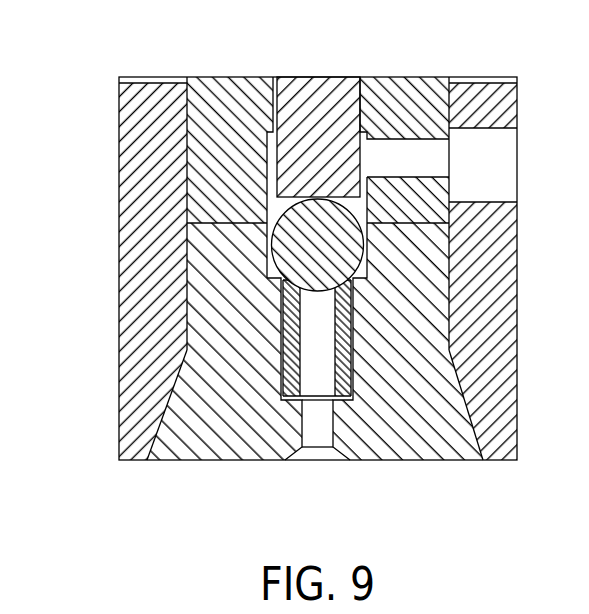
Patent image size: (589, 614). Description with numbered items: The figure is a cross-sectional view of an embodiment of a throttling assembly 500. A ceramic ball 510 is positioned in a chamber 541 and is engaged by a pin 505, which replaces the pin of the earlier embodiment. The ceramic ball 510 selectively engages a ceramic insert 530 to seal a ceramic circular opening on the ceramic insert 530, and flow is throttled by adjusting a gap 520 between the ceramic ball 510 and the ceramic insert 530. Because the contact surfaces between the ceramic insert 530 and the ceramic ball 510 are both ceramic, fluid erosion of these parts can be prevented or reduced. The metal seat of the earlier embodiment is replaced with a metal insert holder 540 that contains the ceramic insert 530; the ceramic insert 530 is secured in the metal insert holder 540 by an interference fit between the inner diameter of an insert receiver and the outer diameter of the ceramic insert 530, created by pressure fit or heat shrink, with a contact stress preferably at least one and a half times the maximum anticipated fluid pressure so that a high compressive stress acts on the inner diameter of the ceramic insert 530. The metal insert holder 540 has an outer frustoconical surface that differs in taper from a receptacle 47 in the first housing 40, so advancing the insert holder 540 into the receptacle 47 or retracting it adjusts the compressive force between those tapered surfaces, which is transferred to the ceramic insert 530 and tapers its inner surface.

The throttling assembly 500 is at (290, 268).
The pin 505 is at (322, 142).
The ceramic ball 510 is at (342, 213).
The gap 520 is at (355, 291).
The ceramic insert 530 is at (318, 338).
The metal insert holder 540 is at (350, 410).
The chamber 541 is at (273, 205).
The first housing 40 is at (130, 423).
The receptacle 47 is at (169, 398).